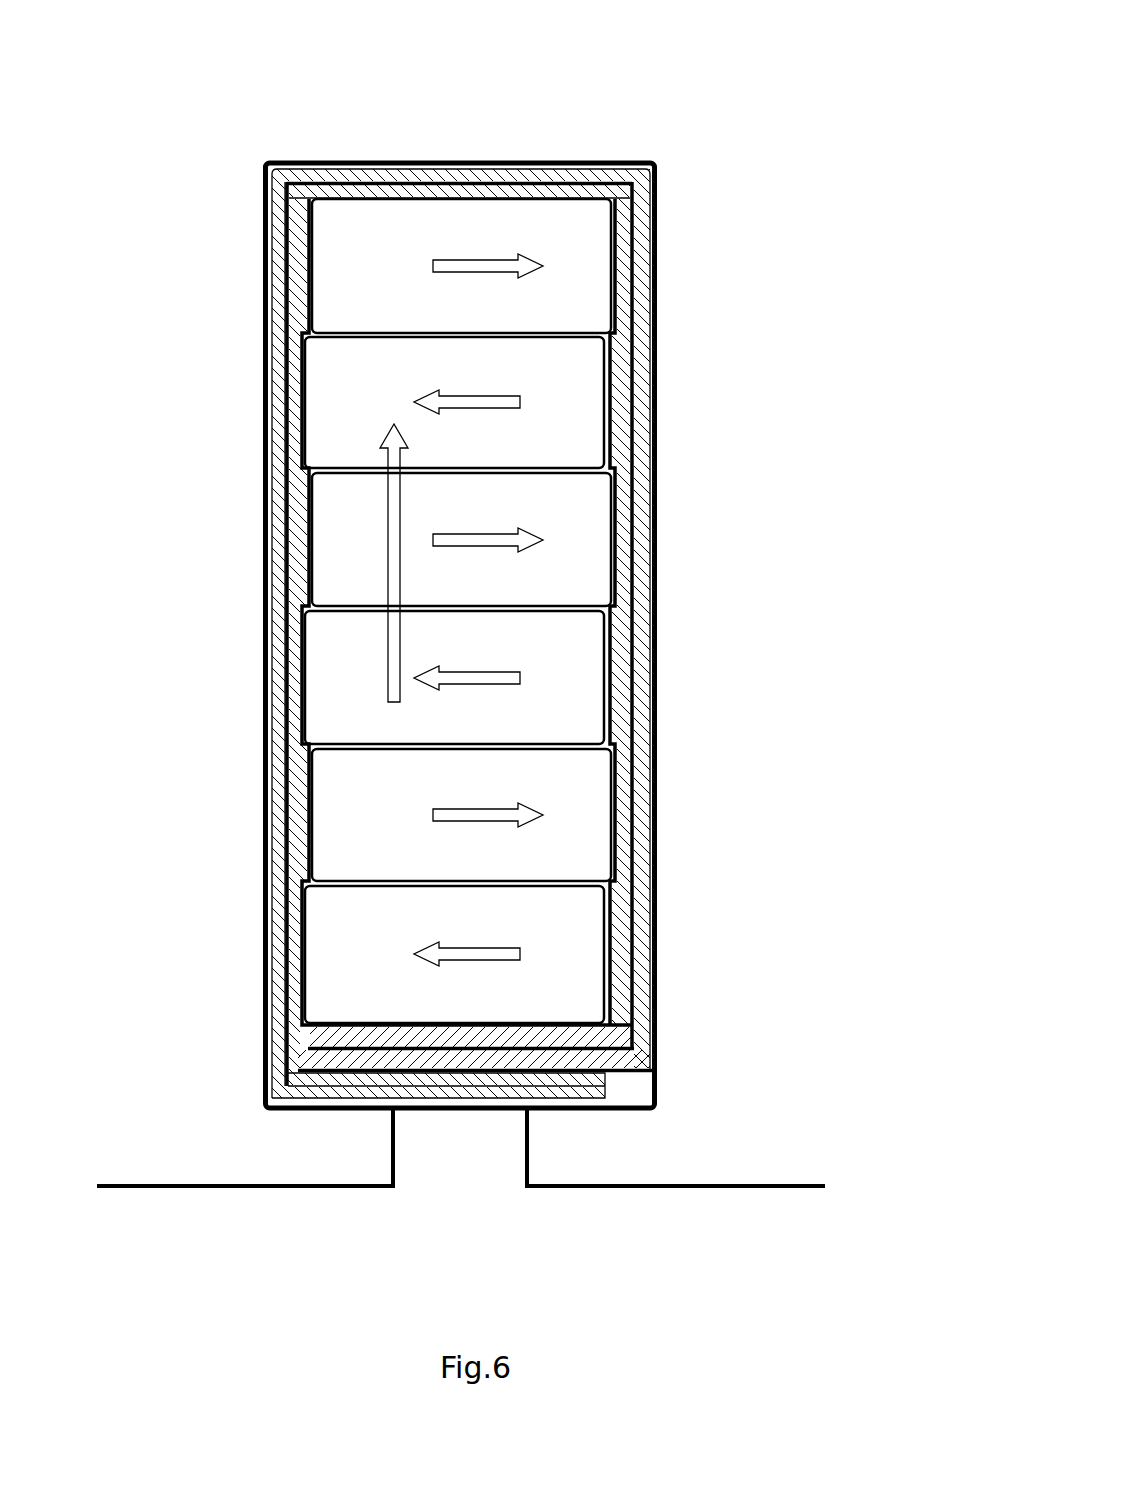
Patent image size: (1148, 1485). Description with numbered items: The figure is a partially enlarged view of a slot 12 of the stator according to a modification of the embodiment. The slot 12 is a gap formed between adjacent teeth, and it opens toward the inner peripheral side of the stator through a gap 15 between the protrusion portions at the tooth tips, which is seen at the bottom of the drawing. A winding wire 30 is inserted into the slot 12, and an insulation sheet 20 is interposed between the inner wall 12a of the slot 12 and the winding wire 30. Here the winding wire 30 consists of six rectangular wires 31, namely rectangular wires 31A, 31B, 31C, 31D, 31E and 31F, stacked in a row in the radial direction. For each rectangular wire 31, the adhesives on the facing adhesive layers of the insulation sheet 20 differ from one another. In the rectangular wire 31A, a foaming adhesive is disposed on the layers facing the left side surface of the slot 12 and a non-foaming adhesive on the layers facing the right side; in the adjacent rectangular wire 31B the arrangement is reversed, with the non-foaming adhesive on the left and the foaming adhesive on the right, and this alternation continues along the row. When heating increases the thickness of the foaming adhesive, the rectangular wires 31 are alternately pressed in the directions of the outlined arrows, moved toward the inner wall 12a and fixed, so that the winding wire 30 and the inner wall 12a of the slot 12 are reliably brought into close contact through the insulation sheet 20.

The slot 12 is at (428, 160).
The inner wall of the slot 12a is at (638, 182).
The gap 15 is at (455, 1128).
The insulation sheet 20 is at (637, 262).
The winding wire 30 is at (335, 247).
The rectangular wire 31 is at (612, 432).
The rectangular wire 31A is at (338, 272).
The rectangular wire 31B is at (338, 406).
The rectangular wire 31C is at (338, 544).
The rectangular wire 31D is at (338, 682).
The rectangular wire 31E is at (338, 818).
The rectangular wire 31F is at (338, 955).